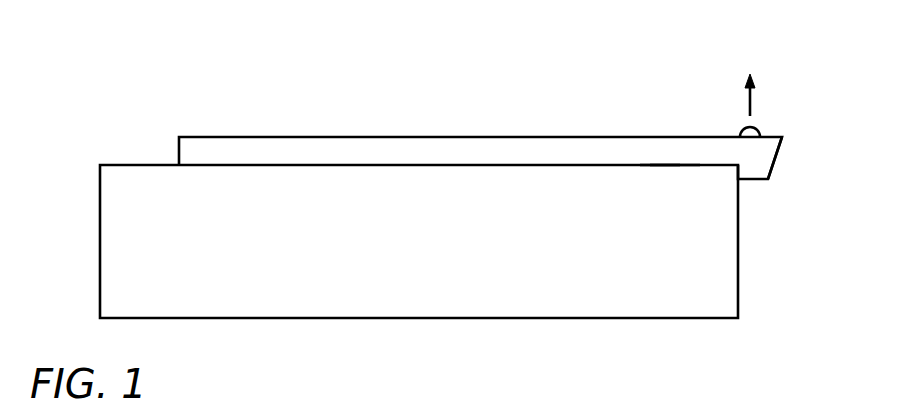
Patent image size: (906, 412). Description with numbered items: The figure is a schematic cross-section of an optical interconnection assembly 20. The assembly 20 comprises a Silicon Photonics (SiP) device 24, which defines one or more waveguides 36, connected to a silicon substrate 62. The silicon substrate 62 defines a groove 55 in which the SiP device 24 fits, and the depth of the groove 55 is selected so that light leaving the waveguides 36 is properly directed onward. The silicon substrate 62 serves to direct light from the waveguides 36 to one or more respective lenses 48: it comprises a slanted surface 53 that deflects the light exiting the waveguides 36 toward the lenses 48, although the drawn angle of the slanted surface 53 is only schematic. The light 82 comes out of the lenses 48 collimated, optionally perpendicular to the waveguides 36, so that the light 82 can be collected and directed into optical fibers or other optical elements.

The optical interconnection assembly 20 is at (82, 78).
The Silicon Photonics (SiP) device 24 is at (740, 237).
The silicon substrate 62 is at (413, 135).
The slanted surface 53 is at (776, 159).
The groove 55 is at (637, 163).
The waveguides 36 is at (677, 166).
The lenses 48 is at (742, 129).
The light 82 is at (751, 96).